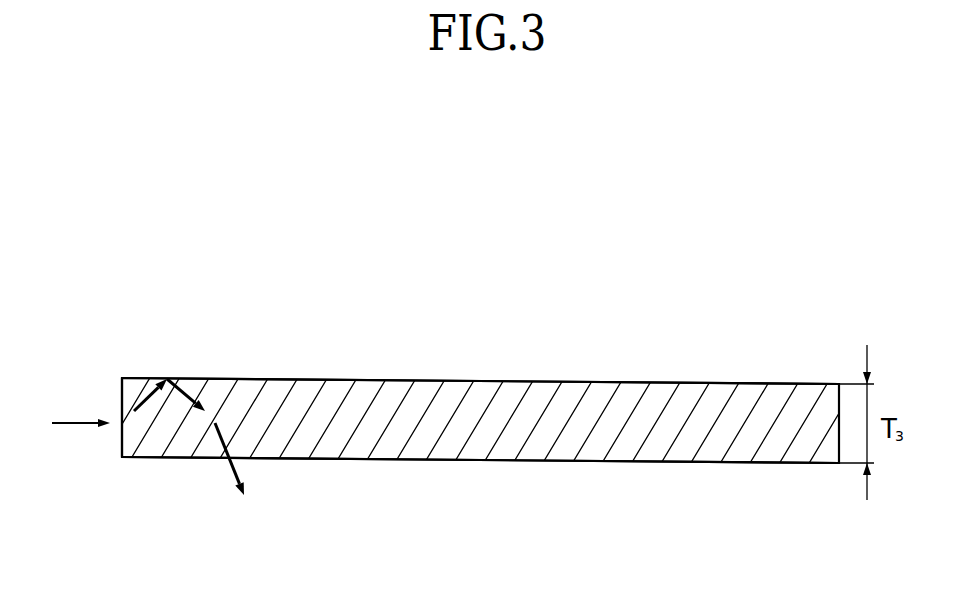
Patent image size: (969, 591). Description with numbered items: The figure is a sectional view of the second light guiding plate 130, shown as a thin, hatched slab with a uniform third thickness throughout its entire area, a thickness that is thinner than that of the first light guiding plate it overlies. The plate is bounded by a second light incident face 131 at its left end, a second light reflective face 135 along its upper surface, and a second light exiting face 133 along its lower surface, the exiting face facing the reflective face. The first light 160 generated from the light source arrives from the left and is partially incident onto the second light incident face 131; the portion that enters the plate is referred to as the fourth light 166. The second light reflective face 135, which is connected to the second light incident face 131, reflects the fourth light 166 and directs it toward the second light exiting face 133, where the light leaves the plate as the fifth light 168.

The second light guiding plate 130 is at (698, 357).
The second light incident face 131 is at (122, 386).
The second light exiting face 133 is at (530, 462).
The second light reflective face 135 is at (547, 380).
The first light 160 is at (72, 424).
The fourth light 166 is at (177, 377).
The fifth light 168 is at (225, 470).